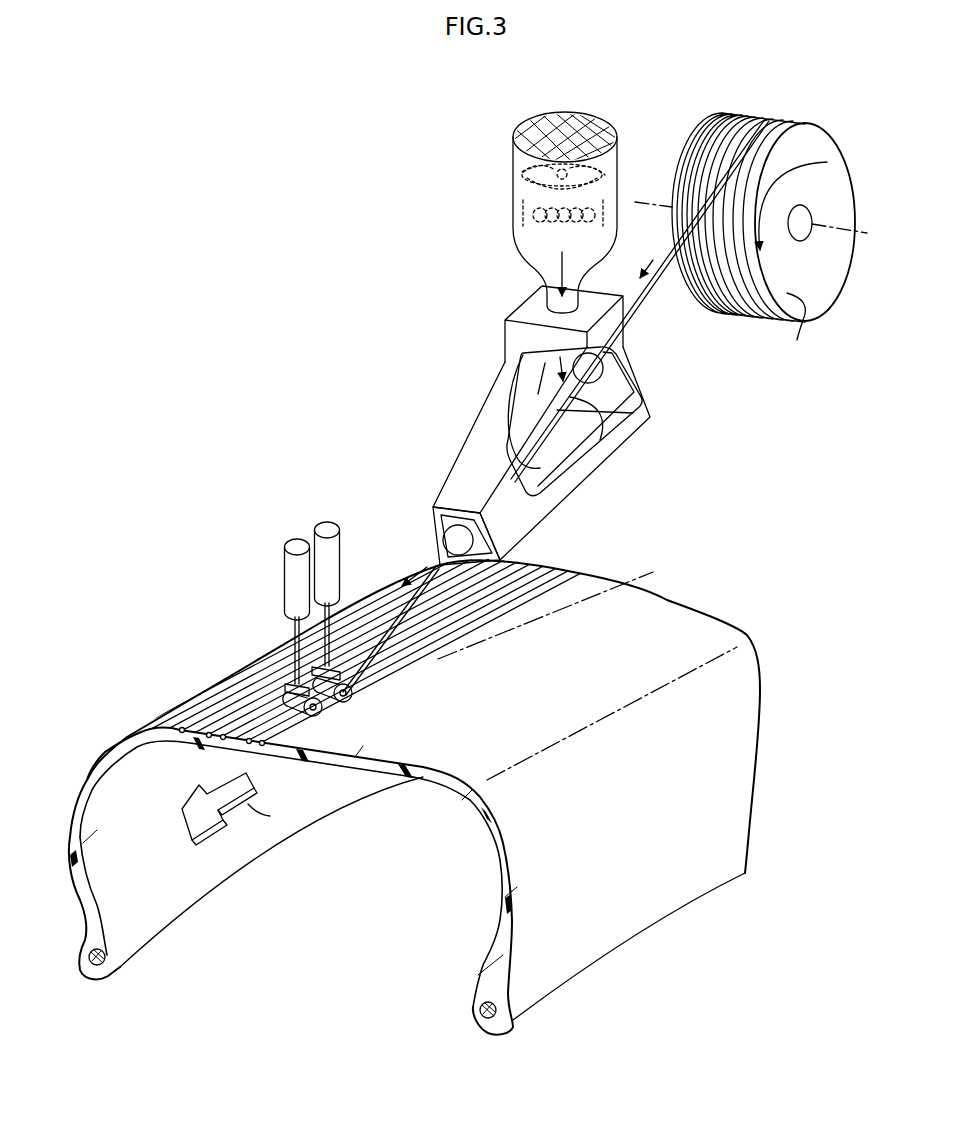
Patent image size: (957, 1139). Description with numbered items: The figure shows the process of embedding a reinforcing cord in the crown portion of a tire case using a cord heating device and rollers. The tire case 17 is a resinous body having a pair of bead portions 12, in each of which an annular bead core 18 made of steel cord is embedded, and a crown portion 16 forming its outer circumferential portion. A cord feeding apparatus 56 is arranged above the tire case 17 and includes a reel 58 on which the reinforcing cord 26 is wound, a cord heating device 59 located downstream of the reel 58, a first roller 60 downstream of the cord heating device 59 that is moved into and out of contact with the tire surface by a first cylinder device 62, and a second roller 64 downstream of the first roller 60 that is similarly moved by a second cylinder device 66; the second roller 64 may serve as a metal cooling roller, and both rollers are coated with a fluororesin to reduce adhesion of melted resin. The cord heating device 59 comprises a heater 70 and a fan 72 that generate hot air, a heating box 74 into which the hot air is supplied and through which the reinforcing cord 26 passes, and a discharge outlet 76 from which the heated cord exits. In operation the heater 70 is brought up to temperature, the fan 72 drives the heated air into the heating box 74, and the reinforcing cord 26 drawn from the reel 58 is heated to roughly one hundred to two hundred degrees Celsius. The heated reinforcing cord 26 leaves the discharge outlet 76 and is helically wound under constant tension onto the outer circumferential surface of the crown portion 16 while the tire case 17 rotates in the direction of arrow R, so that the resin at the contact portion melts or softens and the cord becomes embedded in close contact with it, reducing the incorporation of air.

The bead portion 12 is at (414, 786).
The crown portion 16 is at (217, 722).
The tire case 17 is at (497, 874).
The bead core 18 is at (106, 960).
The reinforcing cord 26 is at (603, 437).
The cord feeding apparatus 56 is at (404, 249).
The reel 58 is at (788, 294).
The cord heating device 59 is at (662, 432).
The first roller 60 is at (352, 697).
The first cylinder device 62 is at (341, 546).
The second roller 64 is at (322, 718).
The second cylinder device 66 is at (283, 567).
The heater 70 is at (512, 223).
The fan 72 is at (620, 167).
The heating box 74 is at (484, 400).
The discharge outlet 76 is at (434, 562).